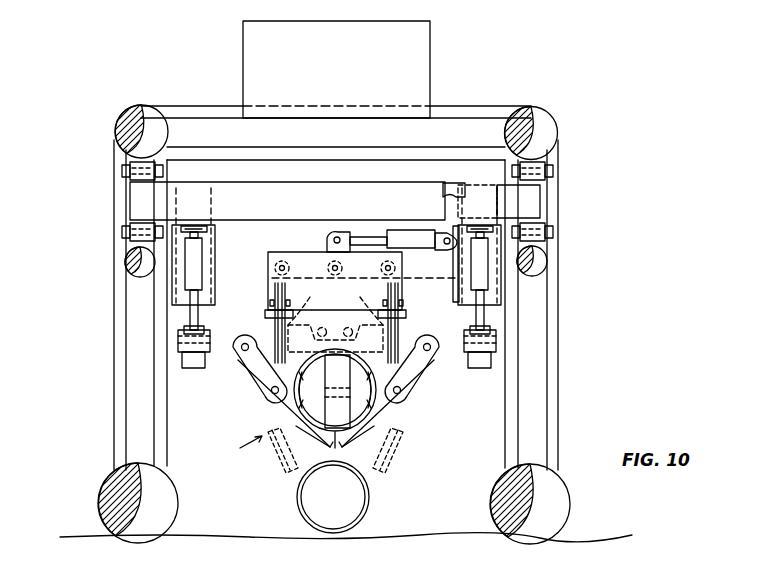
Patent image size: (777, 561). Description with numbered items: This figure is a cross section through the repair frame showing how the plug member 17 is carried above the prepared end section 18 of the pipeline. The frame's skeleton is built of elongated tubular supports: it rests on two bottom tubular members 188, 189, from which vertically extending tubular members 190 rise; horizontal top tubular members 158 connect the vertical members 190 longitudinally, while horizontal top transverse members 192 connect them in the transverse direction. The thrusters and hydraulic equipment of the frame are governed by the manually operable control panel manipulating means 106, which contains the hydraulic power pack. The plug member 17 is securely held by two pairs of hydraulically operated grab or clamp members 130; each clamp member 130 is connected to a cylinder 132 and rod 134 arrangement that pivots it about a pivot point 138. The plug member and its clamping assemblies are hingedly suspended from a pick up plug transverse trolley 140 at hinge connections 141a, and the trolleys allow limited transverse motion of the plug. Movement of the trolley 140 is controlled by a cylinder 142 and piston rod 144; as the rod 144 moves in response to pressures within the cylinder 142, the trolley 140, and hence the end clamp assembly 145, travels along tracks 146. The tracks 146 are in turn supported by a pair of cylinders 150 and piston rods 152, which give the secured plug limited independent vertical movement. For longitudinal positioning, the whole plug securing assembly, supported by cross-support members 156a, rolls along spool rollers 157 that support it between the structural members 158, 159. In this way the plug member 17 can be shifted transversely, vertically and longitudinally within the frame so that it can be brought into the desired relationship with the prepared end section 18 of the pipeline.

The control panel manipulating means 106 is at (432, 75).
The horizontal top transverse member 192 is at (482, 106).
The horizontal top tubular member 158 is at (116, 129).
The spool roller 157 is at (122, 173).
The cross-support member 156a is at (138, 205).
The structural member 159 is at (125, 268).
The vertically extending tubular member 190 is at (114, 391).
The cylinder 150 is at (188, 272).
The piston rod 152 is at (192, 318).
The tubular member 188 is at (178, 533).
The tubular member 189 is at (570, 521).
The pick up plug transverse trolley 140 is at (274, 238).
The piston rod 144 is at (370, 232).
The cylinder 142 is at (415, 230).
The track 146 is at (470, 272).
The hinge connection 141a is at (264, 310).
The rod 134 is at (262, 342).
The pivot point 138 is at (271, 391).
The clamp member 130 is at (292, 414).
The cylinder 132 is at (312, 313).
The end clamp assembly 145 is at (233, 449).
The plug member 17 is at (340, 447).
The prepared end section 18 is at (369, 520).